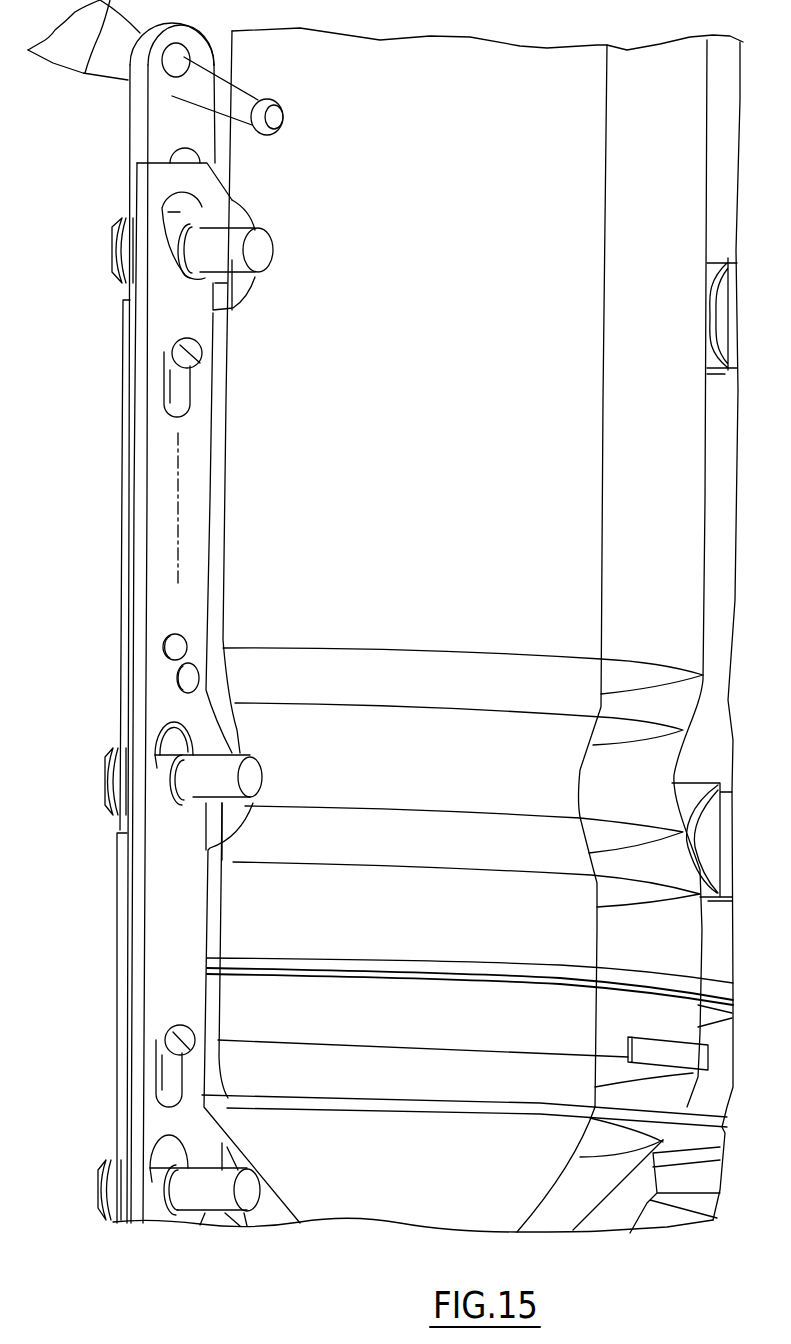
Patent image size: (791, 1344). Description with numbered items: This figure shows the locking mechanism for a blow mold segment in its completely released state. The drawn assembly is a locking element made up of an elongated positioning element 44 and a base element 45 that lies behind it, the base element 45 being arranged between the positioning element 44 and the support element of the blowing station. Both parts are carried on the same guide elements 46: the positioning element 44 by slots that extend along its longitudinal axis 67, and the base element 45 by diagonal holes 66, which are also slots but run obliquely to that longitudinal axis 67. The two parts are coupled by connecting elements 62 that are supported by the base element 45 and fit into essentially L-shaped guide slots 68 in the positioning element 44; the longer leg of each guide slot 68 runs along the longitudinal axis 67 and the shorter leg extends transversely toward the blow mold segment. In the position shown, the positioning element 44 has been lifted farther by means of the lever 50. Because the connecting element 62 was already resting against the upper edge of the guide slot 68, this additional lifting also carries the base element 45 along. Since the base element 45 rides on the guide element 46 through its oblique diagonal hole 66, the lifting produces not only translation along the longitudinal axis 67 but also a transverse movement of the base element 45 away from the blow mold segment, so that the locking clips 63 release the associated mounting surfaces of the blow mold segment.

The positioning element 44 is at (90, 601).
The base element 45 is at (160, 933).
The guide element 46 is at (213, 252).
The lever 50 is at (70, 57).
The connecting element 62 is at (170, 343).
The locking clip 63 is at (218, 743).
The diagonal hole 66 is at (170, 214).
The longitudinal axis 67 is at (178, 581).
The guide slot 68 is at (173, 385).